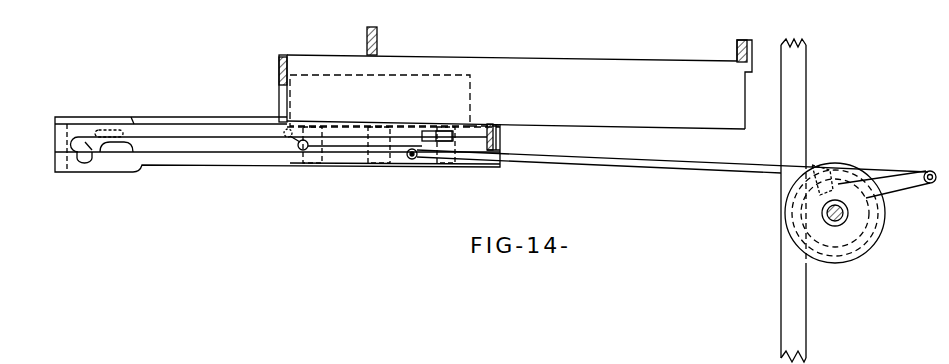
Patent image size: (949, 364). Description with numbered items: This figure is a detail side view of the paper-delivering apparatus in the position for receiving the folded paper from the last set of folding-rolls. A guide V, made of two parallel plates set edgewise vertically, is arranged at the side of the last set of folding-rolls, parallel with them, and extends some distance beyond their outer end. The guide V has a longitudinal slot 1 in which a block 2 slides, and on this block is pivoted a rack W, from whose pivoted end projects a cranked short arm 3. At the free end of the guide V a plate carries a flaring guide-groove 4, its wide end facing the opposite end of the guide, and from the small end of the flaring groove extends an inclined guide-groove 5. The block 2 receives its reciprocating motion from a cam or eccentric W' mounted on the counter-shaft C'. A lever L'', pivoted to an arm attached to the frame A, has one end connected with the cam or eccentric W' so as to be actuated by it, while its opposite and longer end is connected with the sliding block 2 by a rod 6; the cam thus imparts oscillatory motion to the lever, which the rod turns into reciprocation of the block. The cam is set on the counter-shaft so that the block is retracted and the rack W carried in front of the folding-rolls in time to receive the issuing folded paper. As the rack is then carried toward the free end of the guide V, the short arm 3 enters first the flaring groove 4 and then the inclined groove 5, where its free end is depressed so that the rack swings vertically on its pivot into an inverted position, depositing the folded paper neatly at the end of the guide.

The frame A is at (569, 106).
The guide V is at (198, 117).
The longitudinal slot 1 is at (330, 142).
The sliding block 2 is at (405, 154).
The cranked short arm 3 is at (296, 146).
The flaring guide-groove 4 is at (100, 133).
The inclined guide-groove 5 is at (105, 151).
The rod 6 is at (672, 159).
The rack W is at (379, 145).
The cam or eccentric W' is at (835, 213).
The counter-shaft C' is at (826, 213).
The lever L'' is at (887, 193).